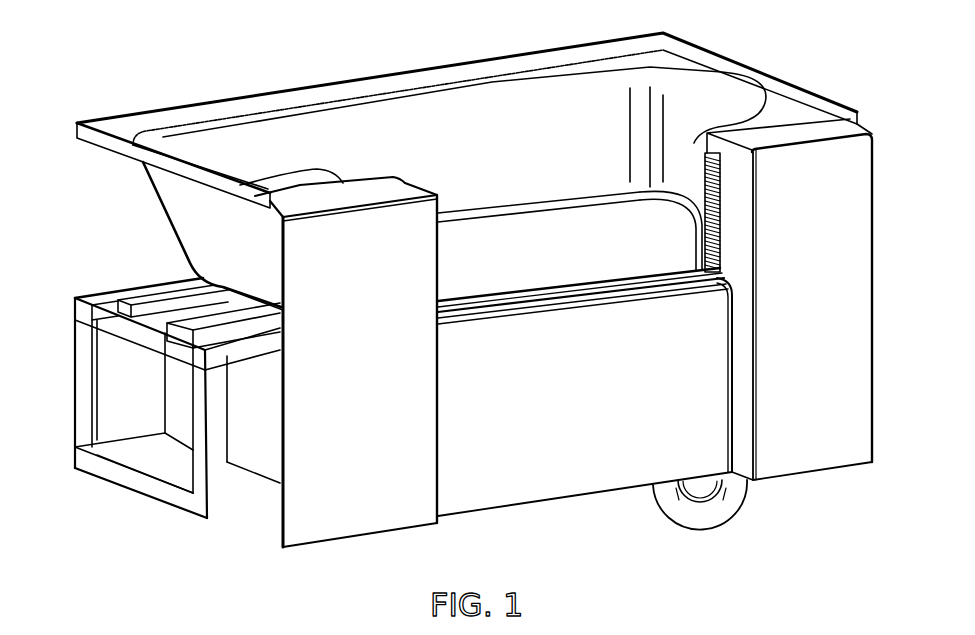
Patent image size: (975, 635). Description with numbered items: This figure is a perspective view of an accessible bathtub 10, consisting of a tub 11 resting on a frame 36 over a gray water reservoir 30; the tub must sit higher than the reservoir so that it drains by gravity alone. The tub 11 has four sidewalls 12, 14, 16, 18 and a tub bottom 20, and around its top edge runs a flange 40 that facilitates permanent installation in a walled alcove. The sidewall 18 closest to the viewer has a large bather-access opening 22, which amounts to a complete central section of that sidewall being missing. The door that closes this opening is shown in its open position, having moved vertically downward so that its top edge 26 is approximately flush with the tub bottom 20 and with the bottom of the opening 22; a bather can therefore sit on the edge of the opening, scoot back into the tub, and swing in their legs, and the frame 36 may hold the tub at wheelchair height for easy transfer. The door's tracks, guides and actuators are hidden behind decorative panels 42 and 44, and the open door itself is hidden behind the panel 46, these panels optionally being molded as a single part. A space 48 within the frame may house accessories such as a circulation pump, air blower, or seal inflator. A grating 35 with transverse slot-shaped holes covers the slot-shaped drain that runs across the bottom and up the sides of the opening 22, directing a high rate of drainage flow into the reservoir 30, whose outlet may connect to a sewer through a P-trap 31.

The accessible bathtub 10 is at (455, 282).
The tub 11 is at (506, 80).
The sidewall 12 is at (571, 127).
The sidewall 14 is at (696, 119).
The sidewall 16 is at (233, 248).
The sidewall 18 is at (262, 187).
The tub bottom 20 is at (504, 274).
The bather-access opening 22 is at (458, 176).
The top edge 26 is at (574, 294).
The gray water reservoir 30 is at (192, 328).
The P-trap 31 is at (722, 507).
The grating 35 is at (704, 163).
The frame 36 is at (107, 300).
The flange 40 is at (142, 119).
The decorative panel 42 is at (399, 451).
The decorative panel 44 is at (851, 432).
The panel 46 is at (555, 426).
The space 48 is at (116, 378).